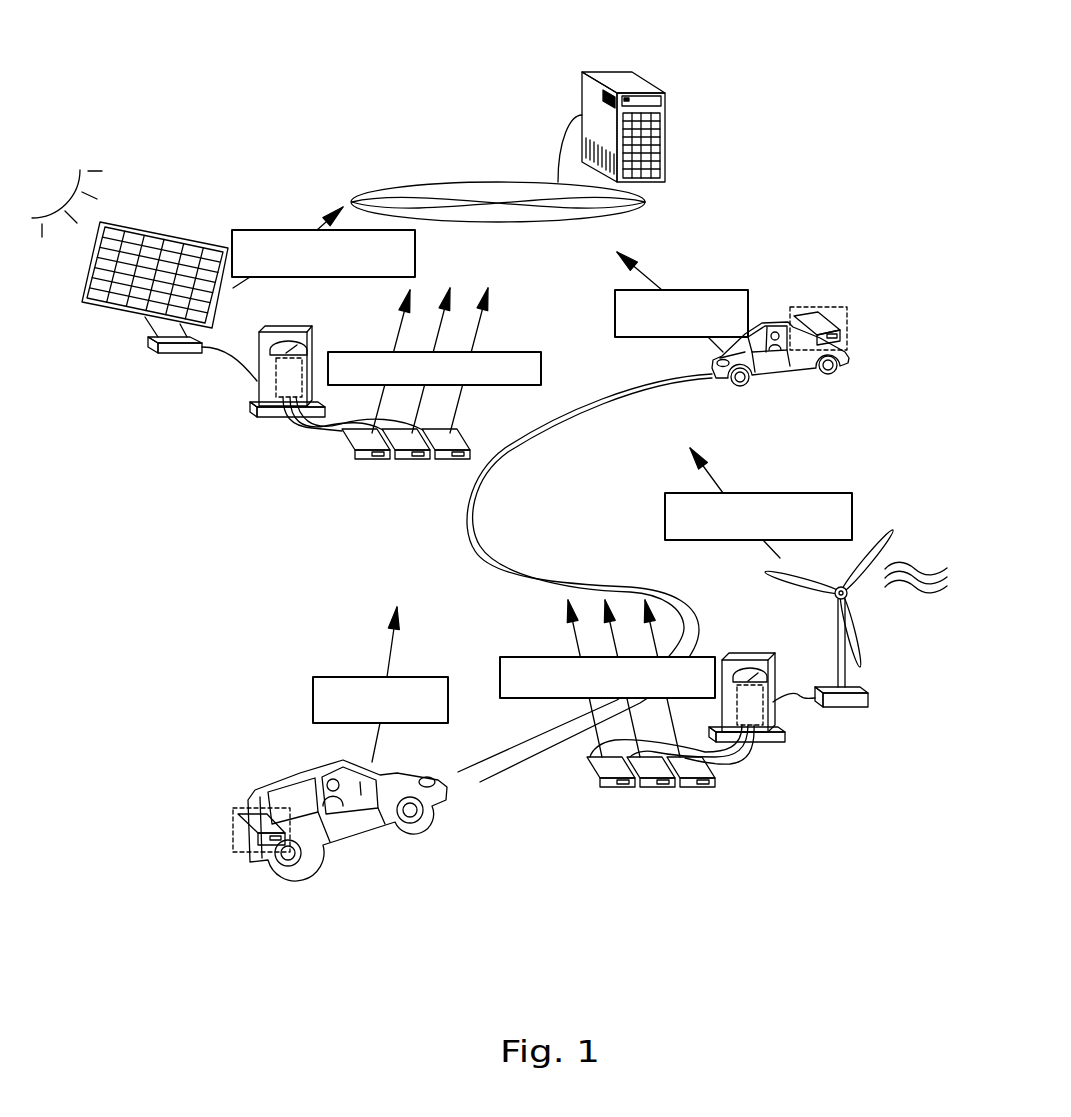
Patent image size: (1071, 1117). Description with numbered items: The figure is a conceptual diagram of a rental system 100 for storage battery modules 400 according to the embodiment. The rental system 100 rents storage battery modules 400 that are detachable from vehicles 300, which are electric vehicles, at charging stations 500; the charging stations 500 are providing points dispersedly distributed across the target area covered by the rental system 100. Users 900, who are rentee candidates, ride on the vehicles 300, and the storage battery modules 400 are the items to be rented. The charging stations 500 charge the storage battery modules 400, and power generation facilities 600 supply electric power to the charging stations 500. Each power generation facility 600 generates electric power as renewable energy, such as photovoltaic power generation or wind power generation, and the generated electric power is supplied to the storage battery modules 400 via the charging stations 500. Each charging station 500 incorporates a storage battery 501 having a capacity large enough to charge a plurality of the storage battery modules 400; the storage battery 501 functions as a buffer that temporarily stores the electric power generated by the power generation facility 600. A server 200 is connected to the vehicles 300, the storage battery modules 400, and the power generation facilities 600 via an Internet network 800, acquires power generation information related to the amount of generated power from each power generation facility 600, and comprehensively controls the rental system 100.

The rental system 100 is at (253, 31).
The server 200 is at (618, 75).
The vehicle 300 is at (761, 378).
The storage battery module 400 is at (447, 460).
The charging station 500 is at (310, 343).
The storage battery 501 is at (302, 382).
The power generation facility 600 is at (168, 357).
The Internet network 800 is at (645, 202).
The user 900 is at (780, 321).